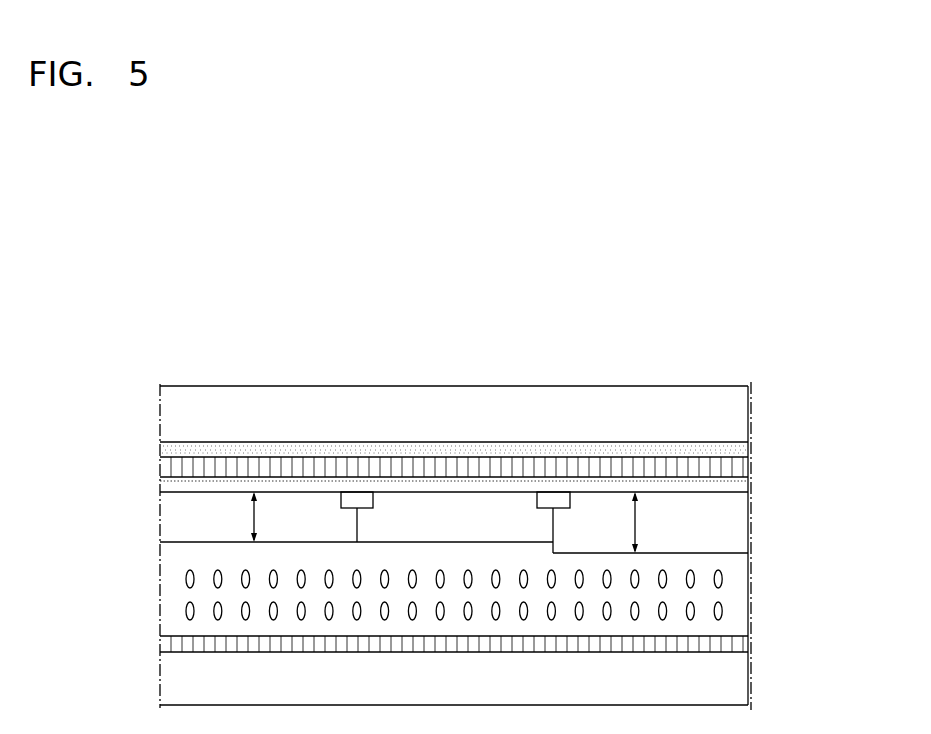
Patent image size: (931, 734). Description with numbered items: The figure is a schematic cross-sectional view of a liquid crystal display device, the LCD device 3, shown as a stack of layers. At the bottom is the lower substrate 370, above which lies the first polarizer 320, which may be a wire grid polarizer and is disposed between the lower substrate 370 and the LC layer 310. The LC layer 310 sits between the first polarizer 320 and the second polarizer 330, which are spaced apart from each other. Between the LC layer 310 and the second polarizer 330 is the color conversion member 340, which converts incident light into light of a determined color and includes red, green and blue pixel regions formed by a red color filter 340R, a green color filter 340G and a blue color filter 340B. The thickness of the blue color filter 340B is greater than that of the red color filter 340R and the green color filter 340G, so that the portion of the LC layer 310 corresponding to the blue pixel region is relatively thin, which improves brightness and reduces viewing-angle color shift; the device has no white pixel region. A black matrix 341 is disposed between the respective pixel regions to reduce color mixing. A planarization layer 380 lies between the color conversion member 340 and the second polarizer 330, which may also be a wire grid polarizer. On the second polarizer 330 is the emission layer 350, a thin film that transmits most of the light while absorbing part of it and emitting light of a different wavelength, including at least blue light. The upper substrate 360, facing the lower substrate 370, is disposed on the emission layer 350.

The LCD device 3 is at (801, 323).
The upper substrate 360 is at (742, 397).
The emission layer 350 is at (743, 446).
The second polarizer 330 is at (743, 461).
The planarization layer 380 is at (743, 482).
The color conversion member 340 is at (758, 494).
The black matrix 341 is at (355, 498).
The red color filter 340R is at (207, 505).
The green color filter 340G is at (453, 505).
The blue color filter 340B is at (595, 503).
The LC layer 310 is at (742, 593).
The first polarizer 320 is at (742, 645).
The lower substrate 370 is at (742, 680).